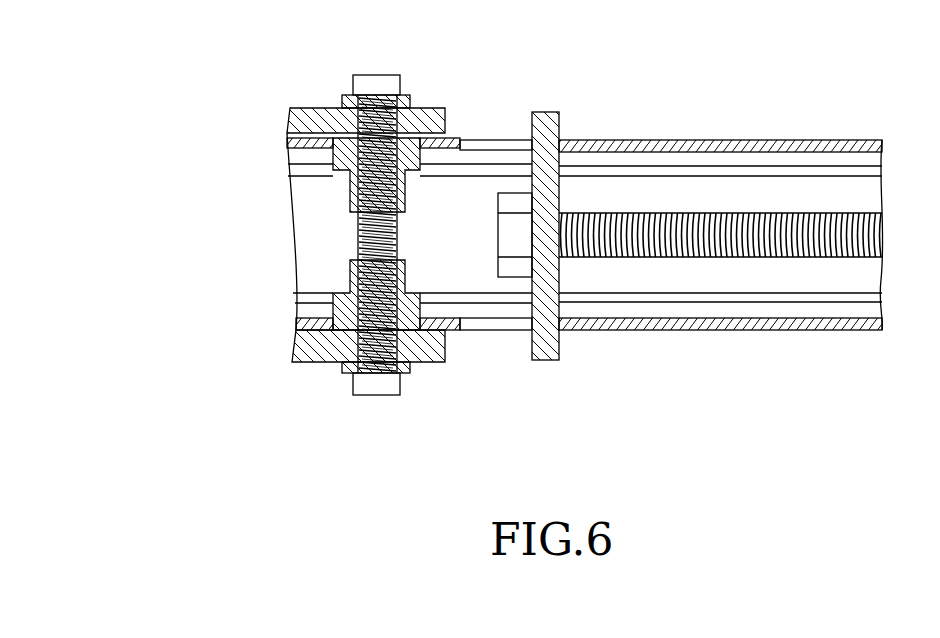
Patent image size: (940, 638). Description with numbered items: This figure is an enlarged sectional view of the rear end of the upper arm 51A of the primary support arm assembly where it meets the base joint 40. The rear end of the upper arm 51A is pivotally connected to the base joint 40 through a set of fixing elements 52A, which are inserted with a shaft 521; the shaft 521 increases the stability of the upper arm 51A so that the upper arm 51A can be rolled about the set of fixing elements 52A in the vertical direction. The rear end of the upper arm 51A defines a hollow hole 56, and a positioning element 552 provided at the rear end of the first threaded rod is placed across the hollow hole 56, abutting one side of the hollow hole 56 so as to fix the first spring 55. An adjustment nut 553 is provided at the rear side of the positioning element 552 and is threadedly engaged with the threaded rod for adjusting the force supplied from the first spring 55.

The base joint 40 is at (316, 122).
The set of fixing elements 52A is at (333, 155).
The shaft 521 is at (358, 240).
The hollow hole 56 is at (494, 140).
The positioning element 552 is at (543, 128).
The adjustment nut 553 is at (498, 234).
The first spring 55 is at (681, 258).
The upper arm 51A is at (733, 140).